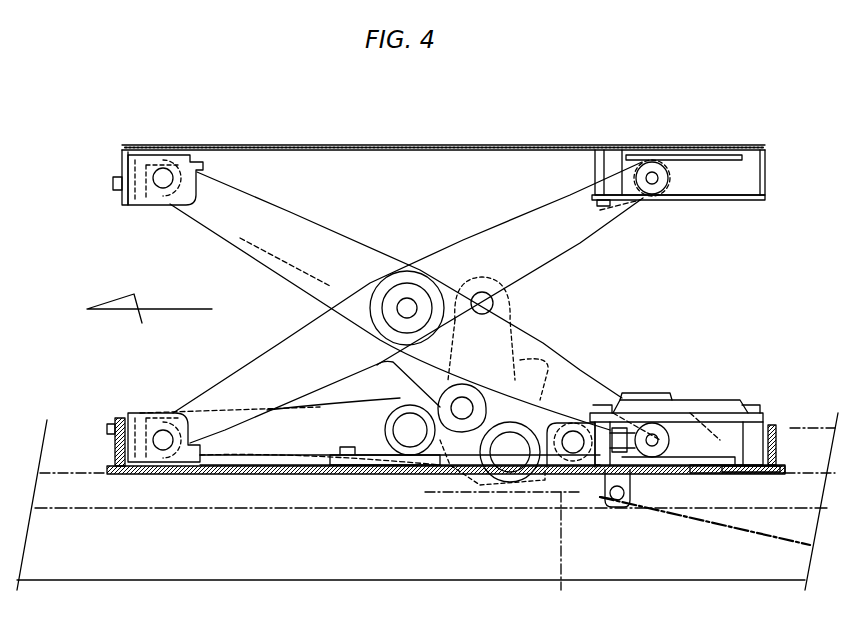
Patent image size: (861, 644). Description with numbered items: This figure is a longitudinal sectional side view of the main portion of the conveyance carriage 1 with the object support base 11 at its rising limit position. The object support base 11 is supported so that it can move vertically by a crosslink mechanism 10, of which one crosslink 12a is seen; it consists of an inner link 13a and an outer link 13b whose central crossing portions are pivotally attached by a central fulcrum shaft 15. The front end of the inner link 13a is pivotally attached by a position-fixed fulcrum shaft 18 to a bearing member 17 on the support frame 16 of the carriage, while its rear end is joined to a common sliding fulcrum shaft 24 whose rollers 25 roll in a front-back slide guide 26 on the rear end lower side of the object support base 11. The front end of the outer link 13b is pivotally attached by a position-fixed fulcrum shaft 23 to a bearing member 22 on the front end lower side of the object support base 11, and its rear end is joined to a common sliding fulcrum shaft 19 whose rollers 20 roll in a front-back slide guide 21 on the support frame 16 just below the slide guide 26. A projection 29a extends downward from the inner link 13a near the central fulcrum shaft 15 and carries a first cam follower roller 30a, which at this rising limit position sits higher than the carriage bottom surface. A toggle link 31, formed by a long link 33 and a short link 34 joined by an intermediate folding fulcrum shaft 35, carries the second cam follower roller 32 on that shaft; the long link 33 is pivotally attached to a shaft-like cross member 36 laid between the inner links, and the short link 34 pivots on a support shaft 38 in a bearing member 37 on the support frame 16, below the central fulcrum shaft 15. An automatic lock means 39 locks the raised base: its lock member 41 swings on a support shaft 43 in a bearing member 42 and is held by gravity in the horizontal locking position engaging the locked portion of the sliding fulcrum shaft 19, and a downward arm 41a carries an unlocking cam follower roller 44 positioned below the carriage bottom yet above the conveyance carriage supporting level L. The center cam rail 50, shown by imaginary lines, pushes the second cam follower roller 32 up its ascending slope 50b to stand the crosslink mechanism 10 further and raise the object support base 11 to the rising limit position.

The conveyance carriage 1 is at (48, 427).
The crosslink mechanism 10 is at (431, 238).
The object support base 11 is at (247, 145).
The crosslink 12a is at (215, 242).
The inner link 13a is at (230, 387).
The outer link 13b is at (293, 257).
The central fulcrum shaft 15 is at (407, 305).
The support frame 16 is at (245, 475).
The bearing member 17 is at (150, 413).
The position-fixed fulcrum shaft 18 is at (160, 450).
The common sliding fulcrum shaft 19 is at (712, 472).
The roller 20 is at (655, 458).
The front-back slide guide 21 is at (710, 412).
The bearing member 22 is at (135, 172).
The position-fixed fulcrum shaft 23 is at (163, 176).
The common sliding fulcrum shaft 24 is at (652, 172).
The roller 25 is at (662, 190).
The front-back slide guide 26 is at (742, 200).
The projection 29a is at (477, 352).
The first cam follower roller 30a is at (410, 473).
The toggle link 31 is at (450, 473).
The second cam follower roller 32 is at (512, 457).
The long link 33 is at (545, 375).
The short link 34 is at (462, 478).
The intermediate folding fulcrum shaft 35 is at (575, 430).
The shaft-like cross member 36 is at (482, 300).
The bearing member 37 is at (345, 466).
The support shaft 38 is at (410, 428).
The automatic lock means 39 is at (652, 394).
The lock member 41 is at (660, 395).
The arm 41a is at (632, 478).
The bearing member 42 is at (612, 497).
The support shaft 43 is at (595, 420).
The unlocking cam follower roller 44 is at (618, 501).
The center cam rail 50 is at (560, 558).
The ascending slope 50b is at (740, 522).
The conveyance carriage supporting level L is at (128, 505).